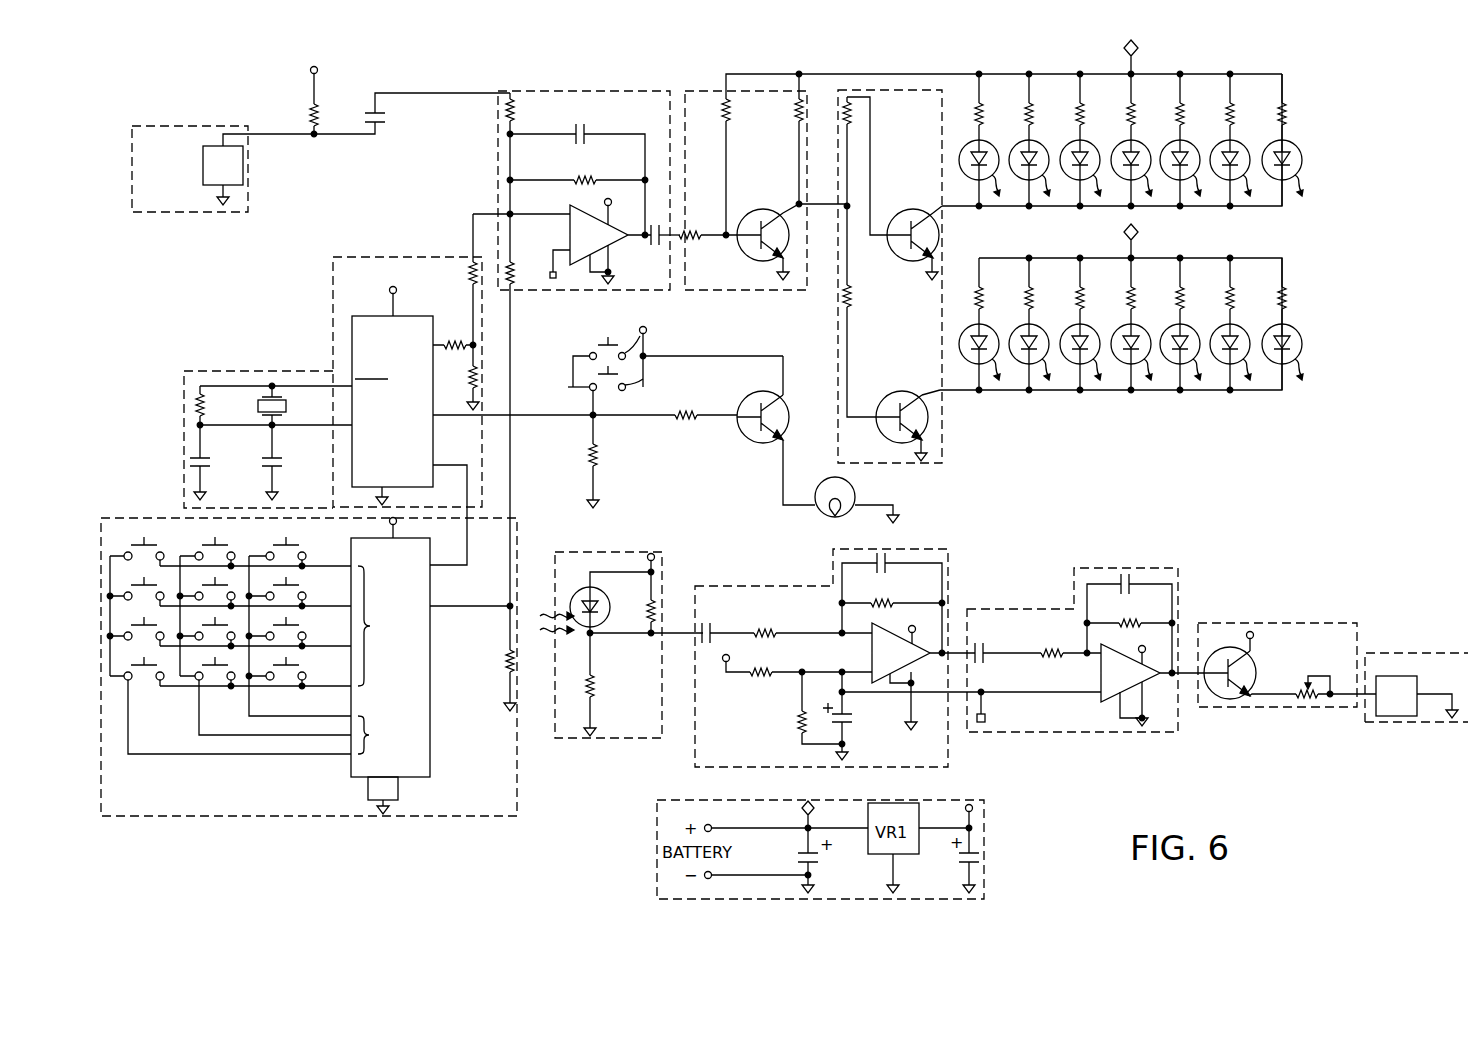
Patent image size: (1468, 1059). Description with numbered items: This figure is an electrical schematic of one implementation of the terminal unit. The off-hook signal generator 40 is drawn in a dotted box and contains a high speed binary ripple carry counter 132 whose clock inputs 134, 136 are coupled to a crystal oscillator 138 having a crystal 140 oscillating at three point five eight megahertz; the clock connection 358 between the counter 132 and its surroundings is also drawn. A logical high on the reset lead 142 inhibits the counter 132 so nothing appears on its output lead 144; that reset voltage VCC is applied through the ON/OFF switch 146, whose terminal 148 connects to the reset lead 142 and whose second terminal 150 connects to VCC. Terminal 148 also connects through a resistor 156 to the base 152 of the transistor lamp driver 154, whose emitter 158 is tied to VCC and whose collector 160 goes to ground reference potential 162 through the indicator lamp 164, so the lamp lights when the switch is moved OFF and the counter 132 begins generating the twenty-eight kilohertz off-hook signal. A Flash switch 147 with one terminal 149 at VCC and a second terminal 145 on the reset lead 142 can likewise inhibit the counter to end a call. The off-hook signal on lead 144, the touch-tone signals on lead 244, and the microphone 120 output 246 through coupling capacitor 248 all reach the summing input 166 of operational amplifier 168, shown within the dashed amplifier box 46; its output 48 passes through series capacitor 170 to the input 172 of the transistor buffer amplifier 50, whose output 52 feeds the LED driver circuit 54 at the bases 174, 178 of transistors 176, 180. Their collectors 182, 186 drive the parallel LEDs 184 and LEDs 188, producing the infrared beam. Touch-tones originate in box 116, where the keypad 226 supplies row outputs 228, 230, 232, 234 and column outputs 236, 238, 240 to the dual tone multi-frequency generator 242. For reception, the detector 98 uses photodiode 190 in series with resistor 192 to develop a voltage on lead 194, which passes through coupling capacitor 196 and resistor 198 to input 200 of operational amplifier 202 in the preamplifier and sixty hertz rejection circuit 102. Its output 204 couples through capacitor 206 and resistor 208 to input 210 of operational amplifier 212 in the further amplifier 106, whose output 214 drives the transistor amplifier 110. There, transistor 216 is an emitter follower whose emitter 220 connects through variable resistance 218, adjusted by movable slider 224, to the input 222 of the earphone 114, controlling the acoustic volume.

The microphone 120 is at (243, 165).
The output of the microphone 246 is at (312, 116).
The coupling capacitor 248 is at (382, 118).
The off-hook signal generator 40 is at (430, 257).
The high speed binary ripple carry counter 132 is at (352, 316).
The output lead 144 is at (448, 343).
The reset lead 142 is at (455, 416).
The clock line 358 is at (470, 545).
The crystal oscillator 138 is at (249, 368).
The clock input 134 is at (322, 386).
The clock input 136 is at (298, 426).
The crystal 140 is at (286, 402).
The amplifier circuit 46 is at (606, 91).
The summing input 166 is at (516, 203).
The operational amplifier 168 is at (588, 182).
The output of the amplifier 48 is at (633, 235).
The series capacitor 170 is at (656, 244).
The input of the transistor buffer amplifier 172 is at (690, 237).
The transistor buffer amplifier 50 is at (720, 91).
The output of the buffer amplifier 52 is at (812, 206).
The LED driver circuit 54 is at (942, 112).
The transistor 176 is at (888, 235).
The base of the transistor 174 is at (876, 236).
The base of the transistor 178 is at (870, 417).
The collector of transistor 182 is at (915, 209).
The collector of transistor 186 is at (910, 392).
The transistor 180 is at (882, 433).
The LEDs 184 is at (992, 146).
The LEDs 188 is at (992, 330).
The second terminal of the Flash switch 145 is at (588, 390).
The terminal of the ON/OFF switch 148 is at (573, 360).
The second terminal of the ON/OFF switch 150 is at (701, 341).
The terminal of the Flash switch 149 is at (644, 380).
The ON/OFF switch 146 is at (618, 335).
The Flash switch 147 is at (611, 384).
The resistor 156 is at (690, 418).
The base of the transistor lamp driver 152 is at (712, 415).
The transistor lamp driver 154 is at (756, 393).
The emitter 158 is at (784, 397).
The collector 160 is at (790, 432).
The indicator lamp 164 is at (817, 490).
The ground reference potential 162 is at (896, 520).
The touch-tone circuitry 116 is at (510, 518).
The keypad 226 is at (316, 555).
The row output 228 is at (346, 568).
The row output 230 is at (346, 608).
The row output 232 is at (346, 648).
The row output 234 is at (346, 688).
The column output 236 is at (262, 716).
The column output 238 is at (276, 754).
The column output 240 is at (288, 754).
The dual tone multi-frequency generator 242 is at (432, 685).
The output lead 244 is at (485, 607).
The detector 98 is at (632, 552).
The photodiode 190 is at (582, 588).
The lead 194 is at (620, 634).
The resistor 192 is at (594, 693).
The preamplifier and 60 hertz rejection circuit 102 is at (748, 586).
The coupling capacitor 196 is at (716, 604).
The resistor 198 is at (772, 626).
The input of the operational amplifier 200 is at (866, 638).
The operational amplifier 202 is at (888, 638).
The further amplifier 106 is at (1040, 609).
The output of the amplifier 204 is at (960, 658).
The coupling capacitor 206 is at (980, 642).
The resistor 208 is at (1052, 656).
The input of the operational amplifier 210 is at (1087, 650).
The operational amplifier 212 is at (1101, 695).
The output 214 is at (1166, 676).
The transistor amplifier 110 is at (1310, 605).
The transistor 216 is at (1214, 695).
The emitter 220 is at (1256, 694).
The movable slider 224 is at (1297, 697).
The variable resistance 218 is at (1320, 700).
The earphone 114 is at (1382, 653).
The input of the earphone 222 is at (1372, 700).